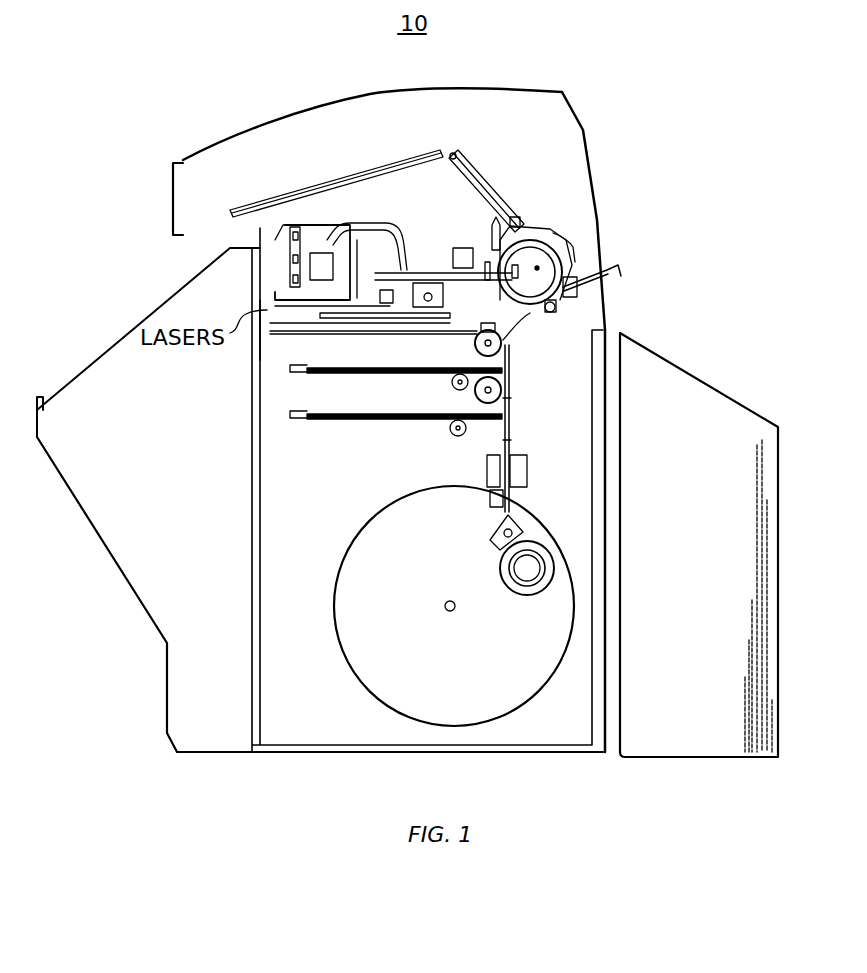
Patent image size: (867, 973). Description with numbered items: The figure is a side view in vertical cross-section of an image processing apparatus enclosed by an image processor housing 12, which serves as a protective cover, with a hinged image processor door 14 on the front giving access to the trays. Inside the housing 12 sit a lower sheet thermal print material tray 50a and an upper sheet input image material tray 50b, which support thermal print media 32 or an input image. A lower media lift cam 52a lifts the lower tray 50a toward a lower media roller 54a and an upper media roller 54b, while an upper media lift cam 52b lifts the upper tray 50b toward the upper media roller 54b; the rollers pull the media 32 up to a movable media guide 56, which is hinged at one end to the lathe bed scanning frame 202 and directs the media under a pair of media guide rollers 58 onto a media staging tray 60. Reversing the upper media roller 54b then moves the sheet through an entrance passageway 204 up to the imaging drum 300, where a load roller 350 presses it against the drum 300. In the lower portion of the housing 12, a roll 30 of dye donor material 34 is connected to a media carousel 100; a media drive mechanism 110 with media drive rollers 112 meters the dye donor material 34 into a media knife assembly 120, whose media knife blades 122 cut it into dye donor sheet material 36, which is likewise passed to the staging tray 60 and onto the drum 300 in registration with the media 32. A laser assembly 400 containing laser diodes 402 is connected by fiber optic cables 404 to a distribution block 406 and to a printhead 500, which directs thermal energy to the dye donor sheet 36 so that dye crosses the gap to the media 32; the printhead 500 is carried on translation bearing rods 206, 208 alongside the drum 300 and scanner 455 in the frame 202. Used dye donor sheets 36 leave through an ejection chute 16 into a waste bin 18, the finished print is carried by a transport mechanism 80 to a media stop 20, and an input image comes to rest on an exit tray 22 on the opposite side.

The image processor housing 12 is at (237, 135).
The image processor door 14 is at (127, 580).
The ejection chute 16 is at (613, 266).
The waste bin 18 is at (687, 370).
The media stop 20 is at (47, 393).
The exit tray 22 is at (112, 335).
The roll 30 is at (529, 592).
The thermal print media 32 is at (373, 367).
The dye donor material 34 is at (537, 567).
The dye donor sheet material 36 is at (503, 440).
The lower sheet thermal print material tray 50a is at (287, 411).
The upper sheet input image material tray 50b is at (287, 367).
The lower media lift cam 52a is at (455, 431).
The upper media lift cam 52b is at (455, 389).
The lower media roller 54a is at (507, 402).
The upper media roller 54b is at (510, 352).
The media guide 56 is at (512, 349).
The media guide rollers 58 is at (476, 338).
The media staging tray 60 is at (257, 333).
The transport mechanism 80 is at (383, 173).
The media carousel 100 is at (328, 625).
The media drive mechanism 110 is at (527, 530).
The media drive rollers 112 is at (497, 535).
The media knife assembly 120 is at (528, 473).
The media knife blades 122 is at (517, 497).
The lathe bed scanning frame 202 is at (550, 233).
The entrance passageway 204 is at (510, 315).
The rear translation bearing rod 206 is at (333, 323).
The front translation bearing rod 208 is at (447, 320).
The imaging drum 300 is at (547, 240).
The load roller 350 is at (560, 305).
The laser assembly 400 is at (320, 232).
The laser diodes 402 is at (290, 263).
The fiber optic cables 404 is at (345, 215).
The distribution block 406 is at (467, 240).
The scanner 455 is at (537, 265).
The printhead 500 is at (465, 243).